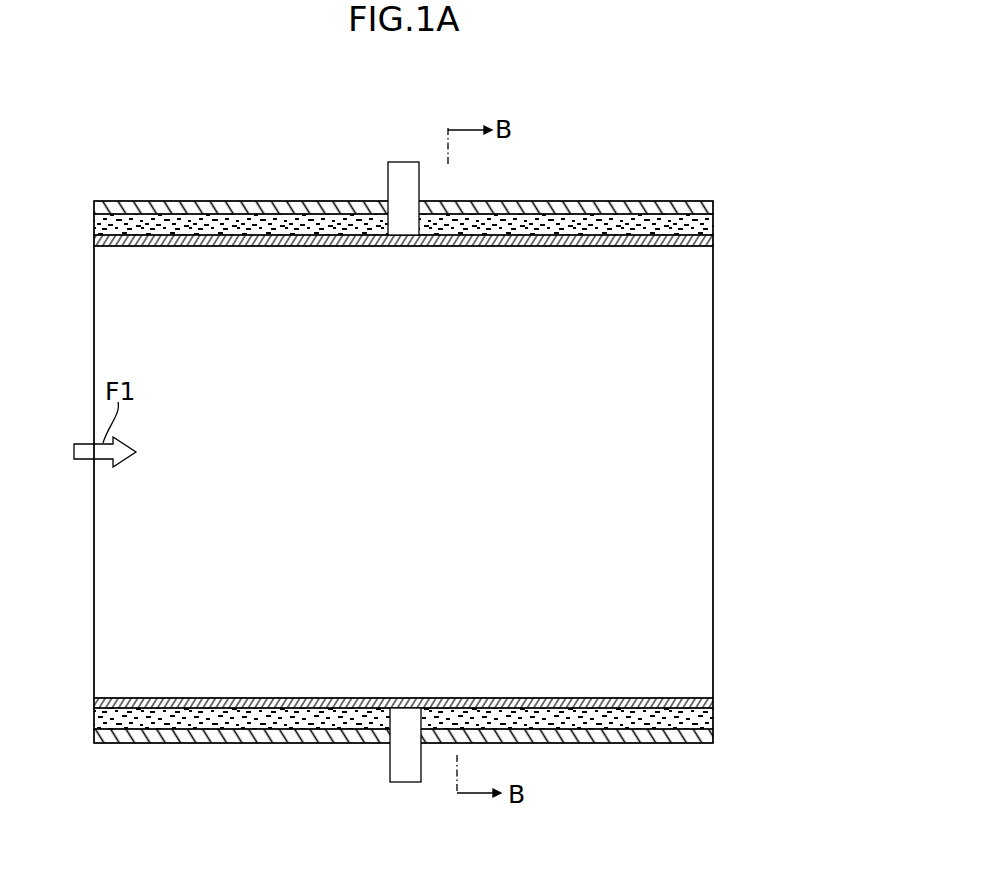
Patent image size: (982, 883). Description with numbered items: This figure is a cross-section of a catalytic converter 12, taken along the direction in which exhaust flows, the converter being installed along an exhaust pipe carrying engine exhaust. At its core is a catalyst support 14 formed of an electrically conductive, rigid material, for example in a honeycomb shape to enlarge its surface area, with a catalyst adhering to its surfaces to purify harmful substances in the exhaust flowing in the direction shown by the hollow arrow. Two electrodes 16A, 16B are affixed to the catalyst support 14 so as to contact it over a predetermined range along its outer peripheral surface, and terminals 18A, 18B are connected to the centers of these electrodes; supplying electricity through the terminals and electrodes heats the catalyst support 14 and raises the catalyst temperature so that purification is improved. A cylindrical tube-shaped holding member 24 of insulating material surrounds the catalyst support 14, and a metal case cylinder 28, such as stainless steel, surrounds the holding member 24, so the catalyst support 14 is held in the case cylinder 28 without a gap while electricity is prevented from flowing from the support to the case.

The catalytic converter 12 is at (223, 763).
The catalyst support 14 is at (714, 305).
The electrode 16A is at (713, 240).
The electrode 16B is at (714, 700).
The terminal 18A is at (388, 170).
The terminal 18B is at (391, 770).
The holding member 24 is at (714, 718).
The case cylinder 28 is at (713, 202).